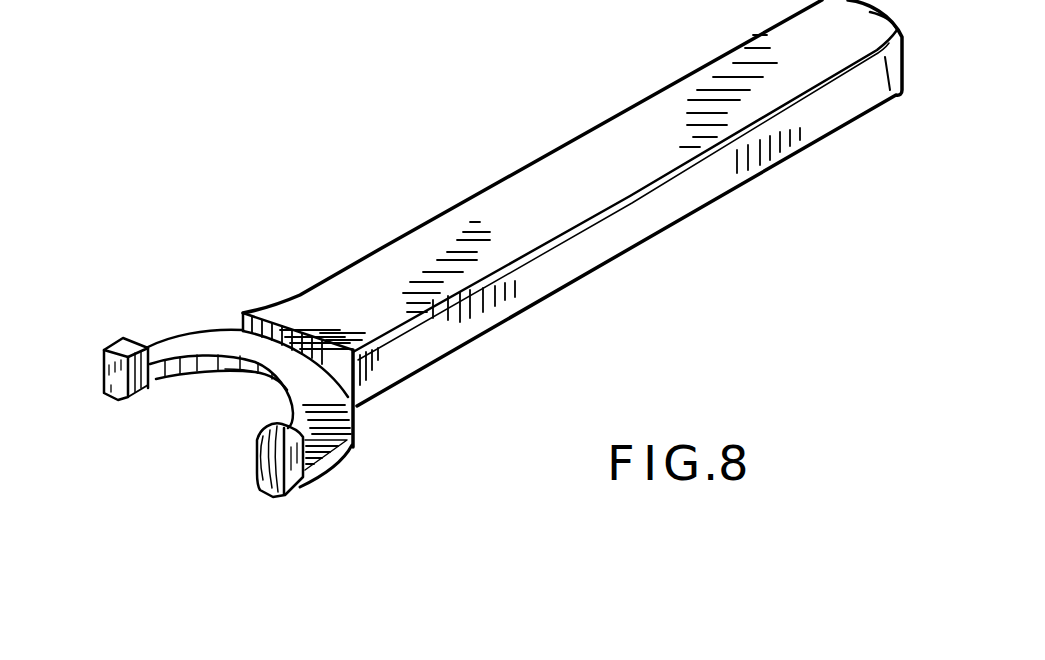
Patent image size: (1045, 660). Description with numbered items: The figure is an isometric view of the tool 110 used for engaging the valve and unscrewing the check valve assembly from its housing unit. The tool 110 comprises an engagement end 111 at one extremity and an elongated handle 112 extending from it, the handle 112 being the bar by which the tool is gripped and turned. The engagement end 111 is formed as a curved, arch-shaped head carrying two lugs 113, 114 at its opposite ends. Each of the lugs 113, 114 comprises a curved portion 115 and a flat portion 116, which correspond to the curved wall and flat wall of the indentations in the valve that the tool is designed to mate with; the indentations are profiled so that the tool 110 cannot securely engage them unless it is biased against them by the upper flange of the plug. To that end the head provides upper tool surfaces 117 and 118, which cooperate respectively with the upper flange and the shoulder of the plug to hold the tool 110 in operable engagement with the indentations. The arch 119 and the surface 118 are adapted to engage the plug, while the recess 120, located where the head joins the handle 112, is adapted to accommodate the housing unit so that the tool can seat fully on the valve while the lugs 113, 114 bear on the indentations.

The tool 110 is at (479, 145).
The engagement end 111 is at (173, 300).
The handle 112 is at (667, 100).
The lug 113 is at (118, 342).
The lug 114 is at (298, 477).
The curved portion 115 is at (157, 362).
The flat portion 116 is at (110, 369).
The upper tool surface 117 is at (202, 377).
The upper tool surface 118 is at (242, 381).
The arch 119 is at (196, 434).
The recess 120 is at (242, 316).